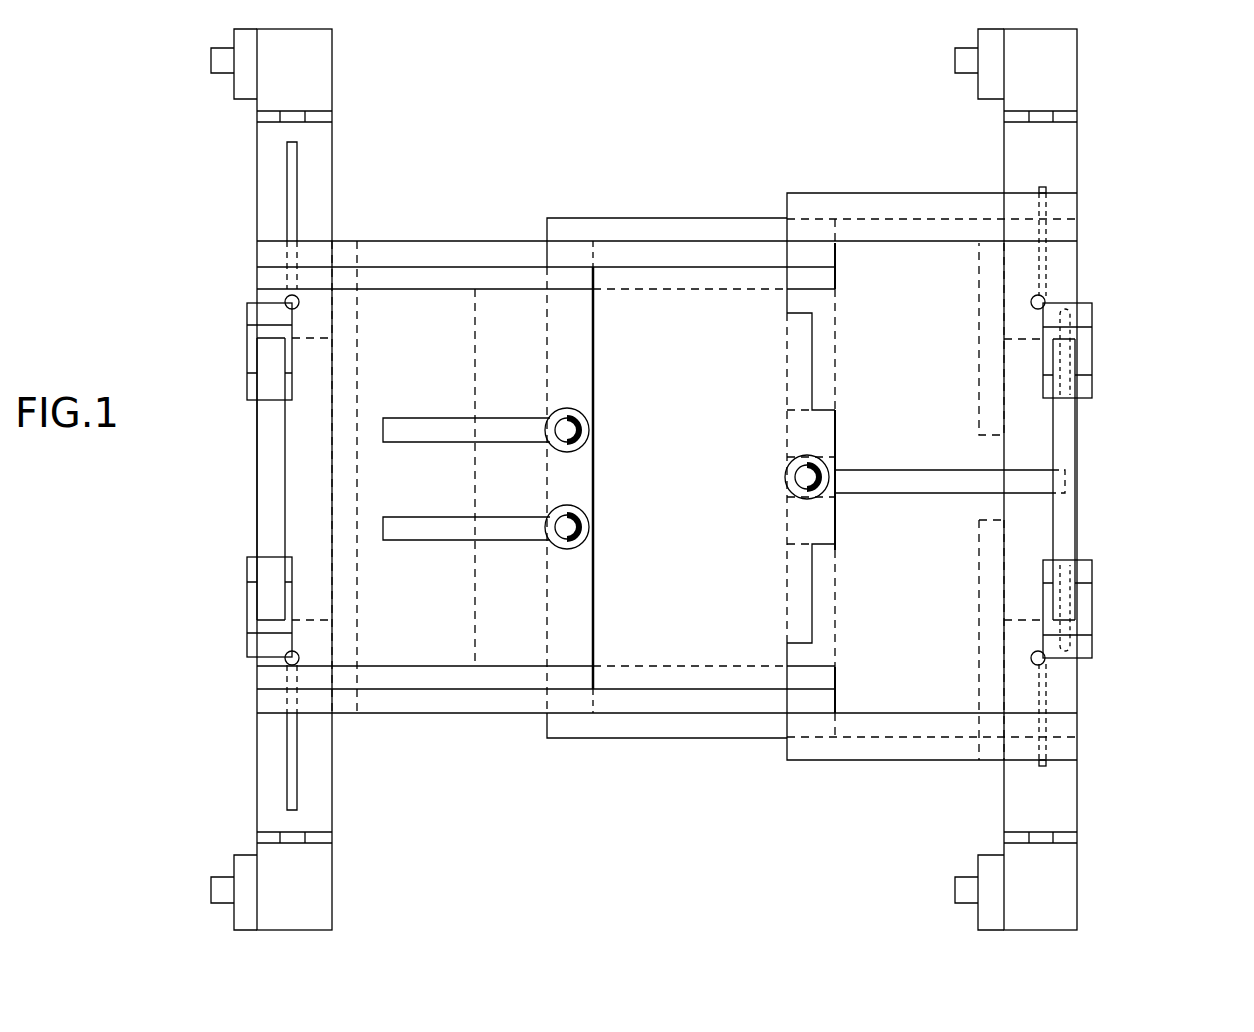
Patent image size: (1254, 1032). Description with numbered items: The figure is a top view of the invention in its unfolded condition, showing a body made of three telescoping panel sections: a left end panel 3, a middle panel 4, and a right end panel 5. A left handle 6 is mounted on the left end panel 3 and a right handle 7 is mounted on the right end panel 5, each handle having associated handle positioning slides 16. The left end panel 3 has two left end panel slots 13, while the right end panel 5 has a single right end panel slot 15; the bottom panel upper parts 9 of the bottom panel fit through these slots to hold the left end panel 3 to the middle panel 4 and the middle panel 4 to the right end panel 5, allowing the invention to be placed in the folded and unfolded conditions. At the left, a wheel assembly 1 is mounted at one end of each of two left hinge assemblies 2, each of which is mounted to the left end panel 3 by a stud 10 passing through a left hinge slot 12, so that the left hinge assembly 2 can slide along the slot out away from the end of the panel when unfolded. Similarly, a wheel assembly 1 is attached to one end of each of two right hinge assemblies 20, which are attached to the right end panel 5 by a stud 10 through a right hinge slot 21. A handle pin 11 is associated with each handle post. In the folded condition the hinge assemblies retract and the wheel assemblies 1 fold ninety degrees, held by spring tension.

The wheel assembly 1 is at (211, 62).
The left hinge assembly 2 is at (257, 132).
The left end panel 3 is at (412, 241).
The middle panel 4 is at (672, 218).
The right end panel 5 is at (852, 193).
The left handle 6 is at (257, 497).
The right handle 7 is at (1077, 480).
The bottom panel upper parts 9 is at (580, 447).
The stud 10 is at (286, 298).
The handle pin 11 is at (1070, 395).
The left hinge slot 12 is at (287, 191).
The left end panel slot 13 is at (464, 418).
The right end panel slot 15 is at (918, 493).
The handle positioning slide 16 is at (247, 316).
The right hinge assembly 20 is at (1004, 131).
The right hinge slot 21 is at (1046, 187).